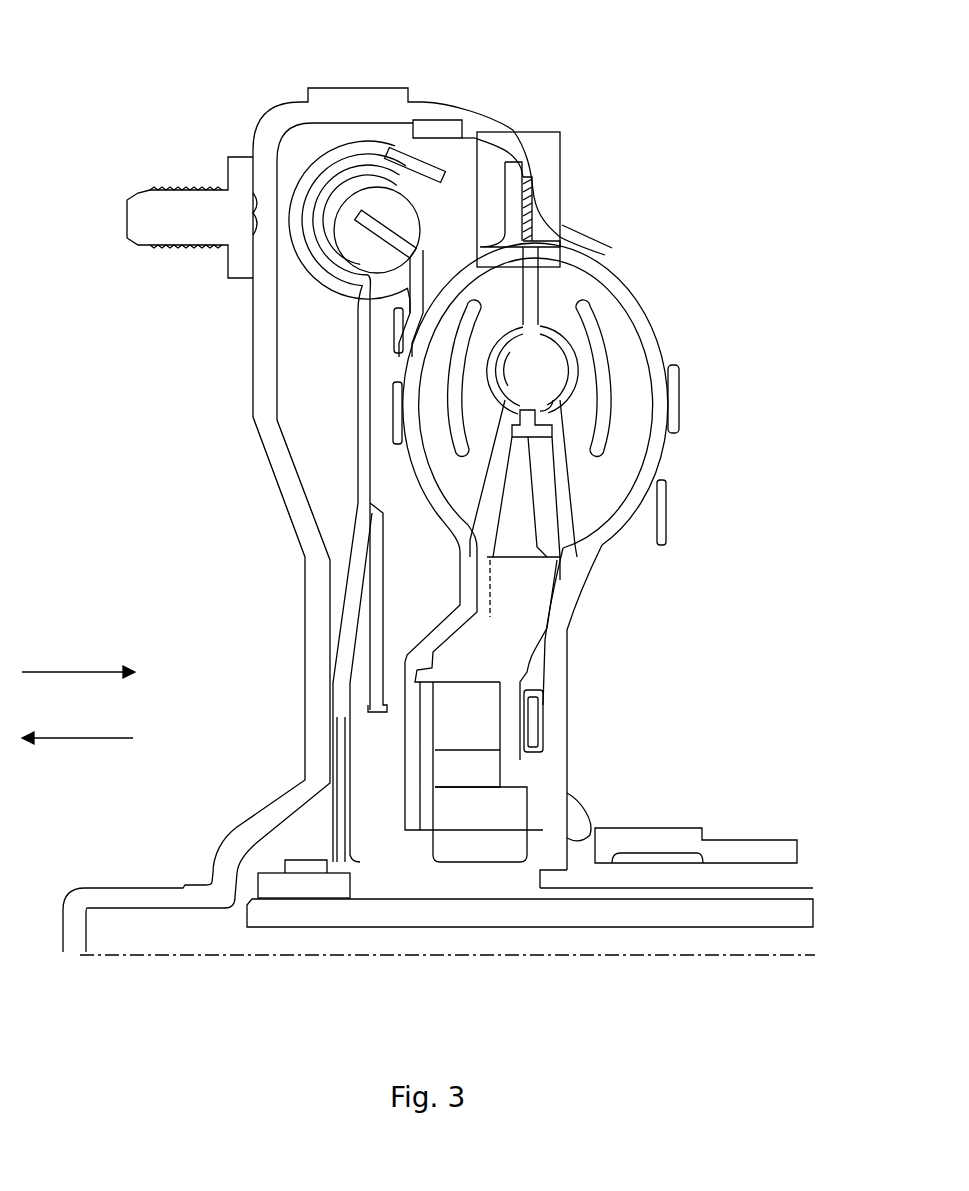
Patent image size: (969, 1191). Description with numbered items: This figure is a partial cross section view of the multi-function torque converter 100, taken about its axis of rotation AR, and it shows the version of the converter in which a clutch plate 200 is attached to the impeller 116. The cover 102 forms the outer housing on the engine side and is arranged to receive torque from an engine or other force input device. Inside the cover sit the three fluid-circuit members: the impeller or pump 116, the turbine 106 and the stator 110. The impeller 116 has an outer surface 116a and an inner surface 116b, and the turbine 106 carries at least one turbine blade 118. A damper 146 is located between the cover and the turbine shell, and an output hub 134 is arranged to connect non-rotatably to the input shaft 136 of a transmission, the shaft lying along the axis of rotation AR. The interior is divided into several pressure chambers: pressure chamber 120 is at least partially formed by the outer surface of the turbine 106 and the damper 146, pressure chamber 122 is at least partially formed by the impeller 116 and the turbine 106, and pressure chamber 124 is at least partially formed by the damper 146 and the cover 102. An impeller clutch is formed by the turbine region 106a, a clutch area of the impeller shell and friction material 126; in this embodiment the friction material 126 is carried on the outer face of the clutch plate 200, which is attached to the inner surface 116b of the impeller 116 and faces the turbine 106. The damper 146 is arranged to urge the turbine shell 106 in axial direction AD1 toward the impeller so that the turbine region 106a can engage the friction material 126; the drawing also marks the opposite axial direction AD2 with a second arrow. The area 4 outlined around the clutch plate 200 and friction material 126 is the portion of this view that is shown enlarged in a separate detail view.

The multi-function torque converter 100 is at (722, 50).
The cover 102 is at (253, 125).
The turbine 106 is at (397, 449).
The turbine region 106a is at (553, 237).
The stator 110 is at (527, 597).
The impeller 116 is at (596, 370).
The outer surface 116a is at (633, 283).
The inner surface 116b is at (625, 332).
The turbine blade 118 is at (413, 398).
The pressure chamber 120 is at (398, 578).
The pressure chamber 122 is at (553, 401).
The pressure chamber 124 is at (332, 493).
The friction material 126 is at (528, 165).
The output hub 134 is at (302, 882).
The input shaft 136 is at (672, 908).
The damper 146 is at (330, 302).
The clutch plate 200 is at (557, 232).
The area 4 is at (562, 165).
The axis of rotation AR is at (585, 960).
The axial direction AD1 is at (57, 672).
The axial direction 2 AD2 is at (78, 738).